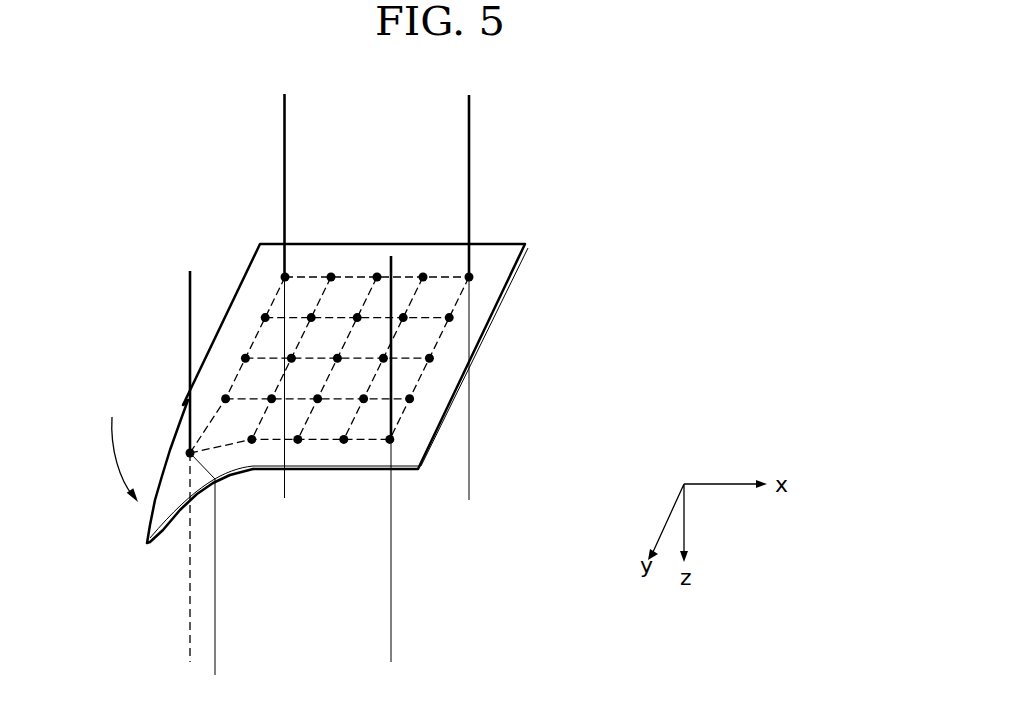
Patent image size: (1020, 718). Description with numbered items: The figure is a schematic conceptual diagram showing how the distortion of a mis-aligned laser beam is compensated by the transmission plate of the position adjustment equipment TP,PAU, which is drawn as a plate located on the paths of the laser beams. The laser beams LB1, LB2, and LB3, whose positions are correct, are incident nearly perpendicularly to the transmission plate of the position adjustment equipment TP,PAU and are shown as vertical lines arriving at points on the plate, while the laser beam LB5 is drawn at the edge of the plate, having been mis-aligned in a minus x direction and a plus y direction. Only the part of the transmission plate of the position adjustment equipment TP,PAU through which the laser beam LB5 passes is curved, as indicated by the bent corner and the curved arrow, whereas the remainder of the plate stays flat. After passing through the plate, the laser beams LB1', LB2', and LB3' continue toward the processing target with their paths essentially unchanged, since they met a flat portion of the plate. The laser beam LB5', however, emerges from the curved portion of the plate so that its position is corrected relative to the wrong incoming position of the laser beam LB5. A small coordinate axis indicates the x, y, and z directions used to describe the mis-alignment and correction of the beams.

The transmission plate of the position adjustment equipment TP,PAU is at (498, 273).
The laser beam LB1 is at (513, 186).
The laser beam LB2 is at (472, 347).
The laser beam LB3 is at (242, 296).
The laser beam LB5 is at (147, 362).
The laser beam after passing through the position adjustment equipment LB1' is at (520, 388).
The laser beam after passing through the position adjustment equipment LB2' is at (440, 550).
The laser beam after passing through the position adjustment equipment LB3' is at (249, 577).
The corrected laser beam after passing through the transmission plate LB5' is at (168, 557).